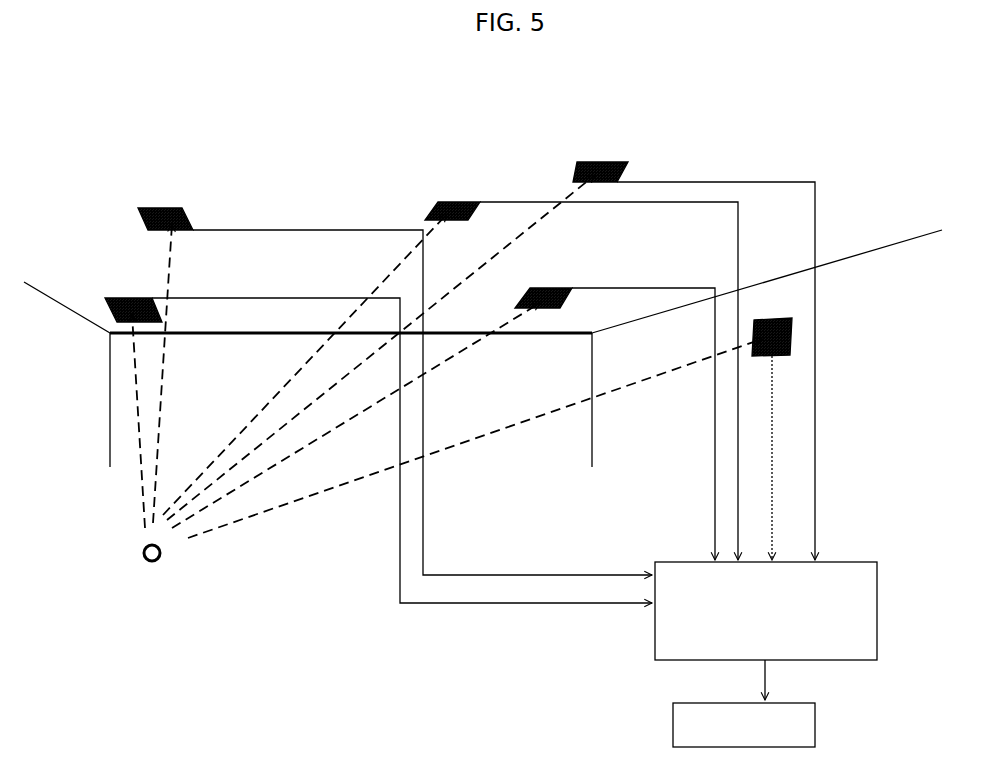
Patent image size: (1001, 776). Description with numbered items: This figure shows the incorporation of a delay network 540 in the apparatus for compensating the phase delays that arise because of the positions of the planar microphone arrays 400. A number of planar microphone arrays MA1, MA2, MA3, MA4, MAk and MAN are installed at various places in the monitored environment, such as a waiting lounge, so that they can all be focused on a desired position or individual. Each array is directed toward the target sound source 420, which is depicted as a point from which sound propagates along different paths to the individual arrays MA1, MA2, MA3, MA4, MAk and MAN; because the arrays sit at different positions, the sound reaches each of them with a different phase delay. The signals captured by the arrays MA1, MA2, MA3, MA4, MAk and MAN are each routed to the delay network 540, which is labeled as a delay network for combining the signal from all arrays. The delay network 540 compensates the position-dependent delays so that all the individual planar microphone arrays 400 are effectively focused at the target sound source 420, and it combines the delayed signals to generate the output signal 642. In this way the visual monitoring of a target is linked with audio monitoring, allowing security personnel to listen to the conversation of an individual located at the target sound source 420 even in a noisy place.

The planar microphone arrays 400 is at (493, 102).
The target sound source 420 is at (426, 368).
The delay network 540 is at (766, 614).
The output signal 642 is at (768, 725).
The microphone array MA1 is at (352, 428).
The microphone array MA2 is at (395, 368).
The microphone array MA3 is at (571, 355).
The microphone array MA4 is at (615, 399).
The microphone array MAk is at (694, 336).
The microphone array MAN is at (812, 436).